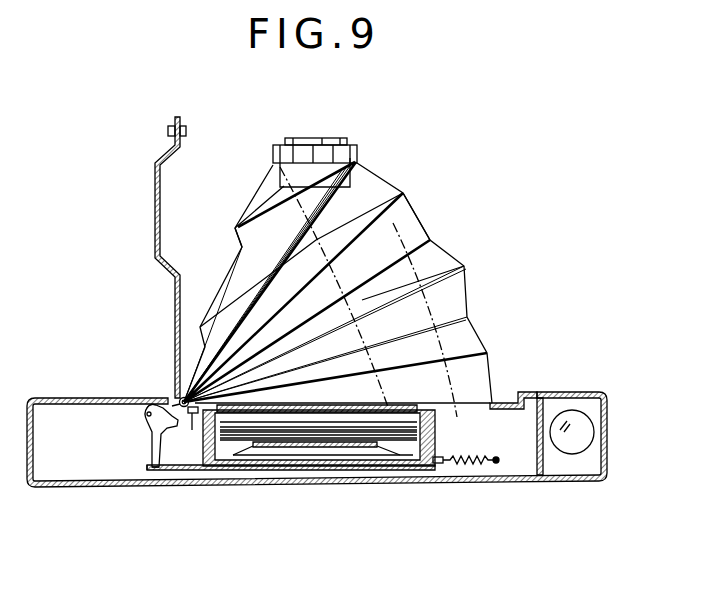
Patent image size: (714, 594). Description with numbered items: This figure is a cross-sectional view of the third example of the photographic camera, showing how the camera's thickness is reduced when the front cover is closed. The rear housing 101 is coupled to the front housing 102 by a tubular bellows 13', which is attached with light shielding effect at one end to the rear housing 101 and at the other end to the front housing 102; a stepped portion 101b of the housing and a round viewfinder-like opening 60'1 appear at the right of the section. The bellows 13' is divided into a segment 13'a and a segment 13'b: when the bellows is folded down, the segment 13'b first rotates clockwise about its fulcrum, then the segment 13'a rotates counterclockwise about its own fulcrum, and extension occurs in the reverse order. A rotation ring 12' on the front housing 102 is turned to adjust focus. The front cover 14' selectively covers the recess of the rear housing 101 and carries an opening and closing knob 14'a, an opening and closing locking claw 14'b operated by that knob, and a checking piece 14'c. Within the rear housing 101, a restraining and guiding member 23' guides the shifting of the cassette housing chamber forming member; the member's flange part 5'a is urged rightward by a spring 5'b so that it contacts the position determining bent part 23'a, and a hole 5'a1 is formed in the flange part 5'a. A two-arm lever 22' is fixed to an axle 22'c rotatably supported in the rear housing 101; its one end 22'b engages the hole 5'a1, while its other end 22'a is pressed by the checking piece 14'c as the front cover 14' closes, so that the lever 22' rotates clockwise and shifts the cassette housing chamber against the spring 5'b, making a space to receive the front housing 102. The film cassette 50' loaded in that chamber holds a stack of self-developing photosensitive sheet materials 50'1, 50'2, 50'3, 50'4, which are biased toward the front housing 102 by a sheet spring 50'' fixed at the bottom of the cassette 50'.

The rear housing 101 is at (71, 464).
The housing step portion 101b is at (513, 398).
The viewfinder lens 60'1 is at (565, 456).
The front cover 14' is at (153, 262).
The opening and closing knob 14'a is at (150, 133).
The opening and closing locking claw 14'b is at (206, 133).
The checking piece 14'c is at (182, 431).
The two-arm lever 22' is at (139, 435).
The other end of the two-arm lever 22'a is at (161, 384).
The one end of the two-arm lever 22'b is at (141, 495).
The axle 22'c is at (130, 385).
The flange part 5'a is at (291, 493).
The hole 5'a1 is at (169, 494).
The photosensitive sheet material 50'1 is at (319, 419).
The film cassette 50' is at (318, 473).
The sheet spring 50'' is at (316, 484).
The photosensitive sheet material 50'2 is at (315, 475).
The photosensitive sheet material 50'3 is at (318, 478).
The photosensitive sheet material 50'4 is at (318, 479).
The restraining and guiding member 23' is at (329, 450).
The position determining bent part 23'a is at (462, 442).
The spring 5'b is at (471, 487).
The rotation ring 12' is at (315, 143).
The front housing 102 is at (356, 158).
The tubular bellows 13' is at (346, 289).
The bellows segment 13'a is at (238, 205).
The bellows segment 13'b is at (439, 216).